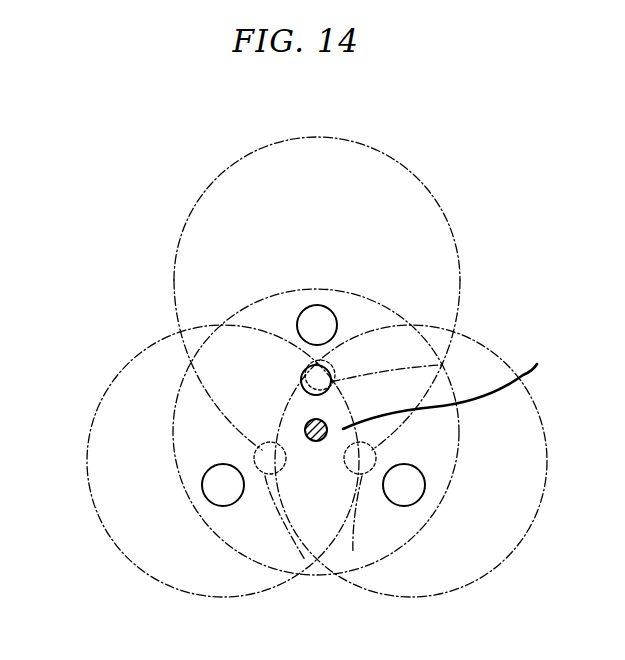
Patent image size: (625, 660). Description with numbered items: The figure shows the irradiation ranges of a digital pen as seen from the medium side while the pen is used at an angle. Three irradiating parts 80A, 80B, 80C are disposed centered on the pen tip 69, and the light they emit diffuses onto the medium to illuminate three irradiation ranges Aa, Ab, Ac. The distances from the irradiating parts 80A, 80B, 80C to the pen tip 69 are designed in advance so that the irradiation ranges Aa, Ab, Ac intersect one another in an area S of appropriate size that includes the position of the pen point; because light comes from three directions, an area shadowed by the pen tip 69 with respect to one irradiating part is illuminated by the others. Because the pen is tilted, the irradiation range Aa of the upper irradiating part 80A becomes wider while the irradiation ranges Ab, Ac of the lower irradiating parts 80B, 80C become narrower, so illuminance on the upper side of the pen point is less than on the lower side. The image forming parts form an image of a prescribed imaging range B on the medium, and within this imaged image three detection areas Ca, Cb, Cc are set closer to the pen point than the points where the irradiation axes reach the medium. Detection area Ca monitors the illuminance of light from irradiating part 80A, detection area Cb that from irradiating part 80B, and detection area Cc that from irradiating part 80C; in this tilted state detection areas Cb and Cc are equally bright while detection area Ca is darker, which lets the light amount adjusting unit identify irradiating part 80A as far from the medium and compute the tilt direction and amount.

The pen tip 69 is at (307, 423).
The irradiating part 80A is at (337, 284).
The irradiating part 80B is at (219, 494).
The irradiating part 80C is at (419, 492).
The irradiation range Aa is at (450, 323).
The irradiation range Ab is at (88, 455).
The irradiation range Ac is at (546, 455).
The imaging range B is at (182, 388).
The detection area Ca is at (443, 366).
The detection area Cb is at (305, 560).
The detection area Cc is at (353, 552).
The area S is at (444, 392).